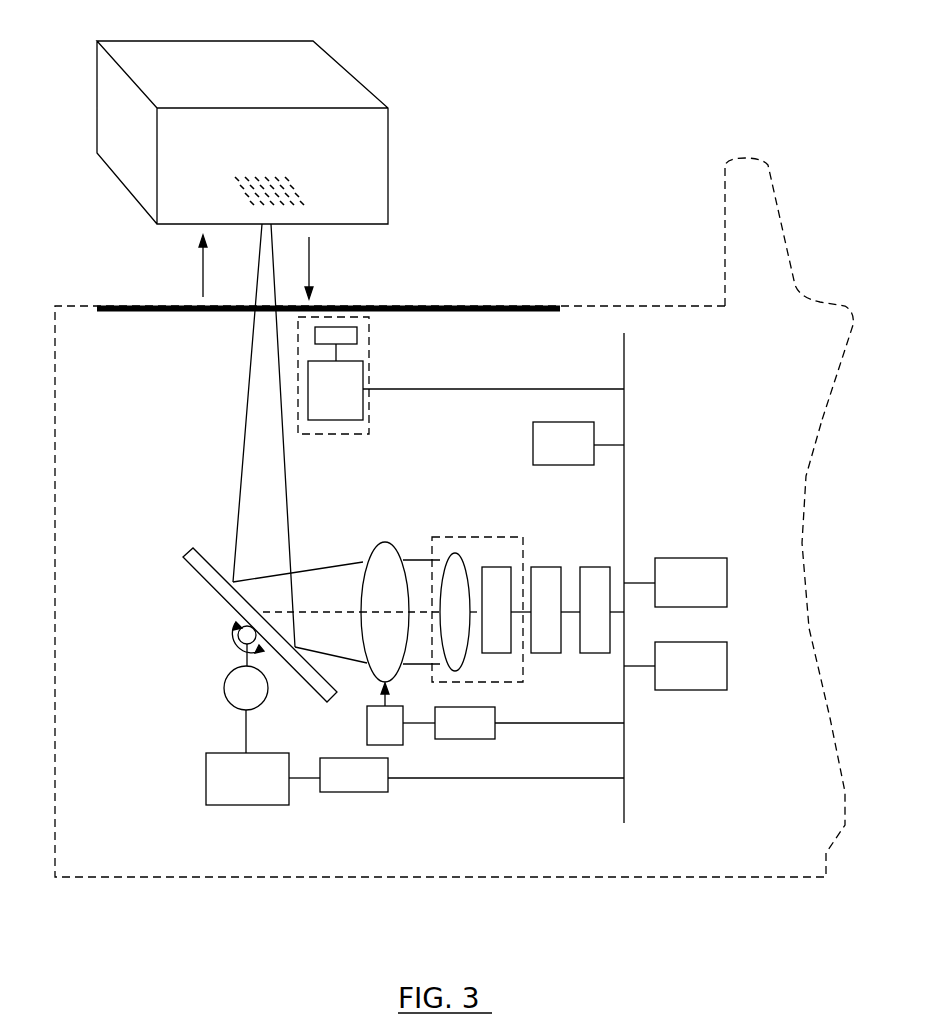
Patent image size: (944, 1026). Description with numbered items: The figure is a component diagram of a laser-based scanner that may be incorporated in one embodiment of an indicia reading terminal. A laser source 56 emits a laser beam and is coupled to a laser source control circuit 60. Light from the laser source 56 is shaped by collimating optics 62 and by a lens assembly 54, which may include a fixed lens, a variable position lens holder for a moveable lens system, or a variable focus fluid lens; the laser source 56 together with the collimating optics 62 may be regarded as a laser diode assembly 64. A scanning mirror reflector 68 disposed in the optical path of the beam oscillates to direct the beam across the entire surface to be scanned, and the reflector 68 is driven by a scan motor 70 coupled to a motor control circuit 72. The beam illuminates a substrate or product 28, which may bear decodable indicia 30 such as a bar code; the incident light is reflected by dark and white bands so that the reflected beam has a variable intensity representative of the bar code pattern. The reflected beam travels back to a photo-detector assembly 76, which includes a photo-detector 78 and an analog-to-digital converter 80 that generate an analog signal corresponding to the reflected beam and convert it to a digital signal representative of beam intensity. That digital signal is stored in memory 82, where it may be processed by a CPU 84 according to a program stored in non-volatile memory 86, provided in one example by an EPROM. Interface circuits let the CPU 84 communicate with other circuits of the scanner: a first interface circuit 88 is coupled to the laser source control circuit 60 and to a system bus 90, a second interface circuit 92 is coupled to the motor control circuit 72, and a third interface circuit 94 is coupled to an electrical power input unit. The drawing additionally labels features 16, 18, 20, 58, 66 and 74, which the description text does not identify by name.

The housing 16 is at (695, 305).
The handle portion 18 is at (722, 218).
The window plate 20 is at (396, 305).
The substrate 28 is at (130, 155).
The decodable indicia 30 is at (290, 168).
The lens assembly 54 is at (383, 542).
The laser source 56 is at (493, 567).
The light beam 58 is at (265, 440).
The laser source control circuit 60 is at (545, 567).
The collimating optics 62 is at (453, 548).
The laser diode assembly 64 is at (497, 682).
The emitted light 66 is at (185, 266).
The scanning mirror reflector 68 is at (203, 548).
The scan motor 70 is at (224, 688).
The motor control circuit 72 is at (263, 779).
The reflected light 74 is at (331, 268).
The photo-detector assembly 76 is at (370, 430).
The photo-detector 78 is at (362, 338).
The analog-to-digital converter 80 is at (466, 390).
The memory 82 is at (675, 582).
The CPU 84 is at (578, 443).
The non-volatile memory 86 is at (675, 666).
The first interface circuit 88 is at (593, 567).
The system bus 90 is at (622, 355).
The second interface circuit 92 is at (472, 775).
The third interface circuit 94 is at (513, 723).